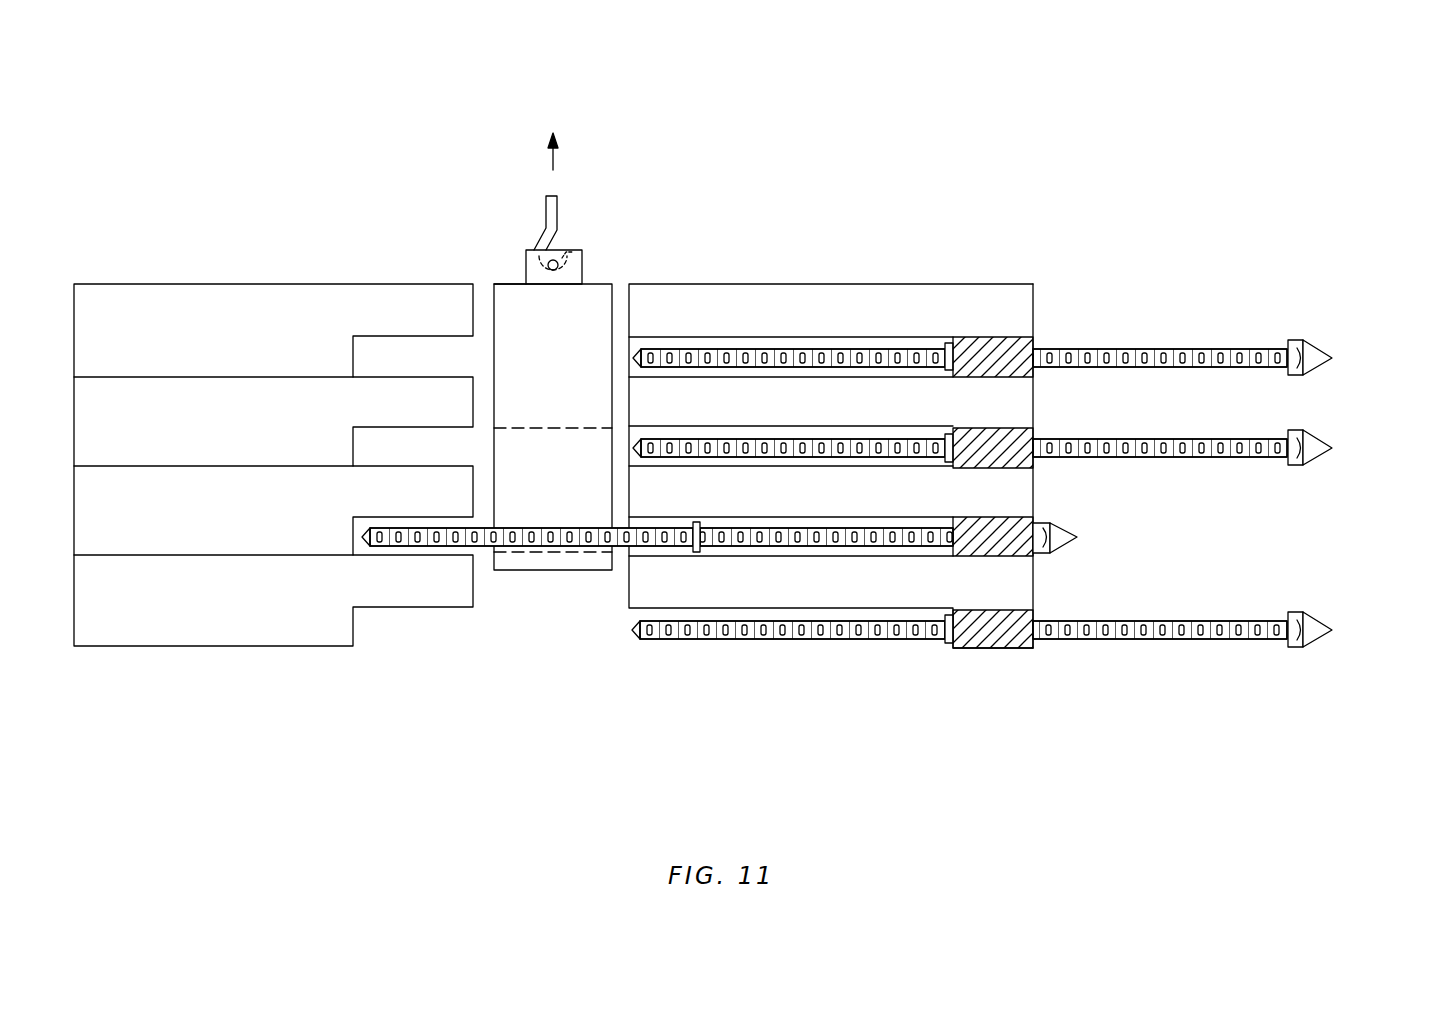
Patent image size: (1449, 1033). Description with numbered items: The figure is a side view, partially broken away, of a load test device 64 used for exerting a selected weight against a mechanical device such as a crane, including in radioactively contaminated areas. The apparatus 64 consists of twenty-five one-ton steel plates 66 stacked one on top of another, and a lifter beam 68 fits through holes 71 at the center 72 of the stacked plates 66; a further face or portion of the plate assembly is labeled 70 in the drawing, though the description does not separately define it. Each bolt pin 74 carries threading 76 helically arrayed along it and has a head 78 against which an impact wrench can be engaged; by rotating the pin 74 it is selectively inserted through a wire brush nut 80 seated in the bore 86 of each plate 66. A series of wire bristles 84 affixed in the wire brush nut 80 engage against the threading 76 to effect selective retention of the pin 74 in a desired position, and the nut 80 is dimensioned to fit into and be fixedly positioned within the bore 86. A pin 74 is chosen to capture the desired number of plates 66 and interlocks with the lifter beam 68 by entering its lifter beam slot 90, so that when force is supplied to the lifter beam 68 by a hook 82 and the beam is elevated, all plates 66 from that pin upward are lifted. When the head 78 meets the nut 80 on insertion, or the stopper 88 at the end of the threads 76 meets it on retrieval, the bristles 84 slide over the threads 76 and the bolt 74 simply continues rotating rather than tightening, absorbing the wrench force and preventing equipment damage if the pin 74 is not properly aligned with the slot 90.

The load test device 64 is at (846, 148).
The steel plates 66 is at (238, 387).
The lifter beam 68 is at (545, 323).
The outer face of second member 70 is at (1033, 427).
The holes 71 is at (494, 286).
The center 72 is at (632, 178).
The bolt pin 74 is at (840, 437).
The threading 76 is at (803, 438).
The head 78 is at (1320, 368).
The wire brush nut 80 is at (977, 377).
The hook 82 is at (547, 205).
The wire bristles 84 is at (1035, 350).
The bore 86 is at (678, 433).
The stopper 88 is at (945, 343).
The lifter beam slot 90 is at (532, 502).